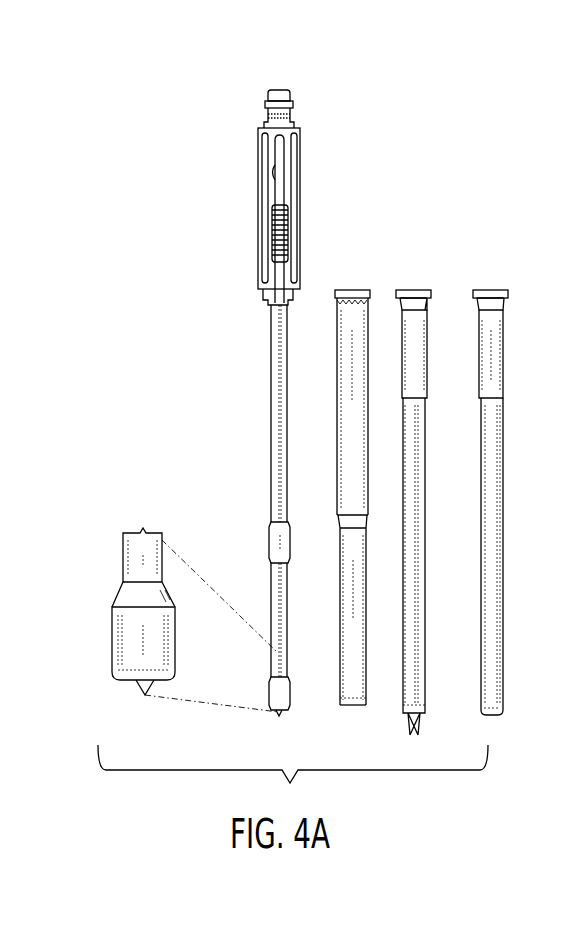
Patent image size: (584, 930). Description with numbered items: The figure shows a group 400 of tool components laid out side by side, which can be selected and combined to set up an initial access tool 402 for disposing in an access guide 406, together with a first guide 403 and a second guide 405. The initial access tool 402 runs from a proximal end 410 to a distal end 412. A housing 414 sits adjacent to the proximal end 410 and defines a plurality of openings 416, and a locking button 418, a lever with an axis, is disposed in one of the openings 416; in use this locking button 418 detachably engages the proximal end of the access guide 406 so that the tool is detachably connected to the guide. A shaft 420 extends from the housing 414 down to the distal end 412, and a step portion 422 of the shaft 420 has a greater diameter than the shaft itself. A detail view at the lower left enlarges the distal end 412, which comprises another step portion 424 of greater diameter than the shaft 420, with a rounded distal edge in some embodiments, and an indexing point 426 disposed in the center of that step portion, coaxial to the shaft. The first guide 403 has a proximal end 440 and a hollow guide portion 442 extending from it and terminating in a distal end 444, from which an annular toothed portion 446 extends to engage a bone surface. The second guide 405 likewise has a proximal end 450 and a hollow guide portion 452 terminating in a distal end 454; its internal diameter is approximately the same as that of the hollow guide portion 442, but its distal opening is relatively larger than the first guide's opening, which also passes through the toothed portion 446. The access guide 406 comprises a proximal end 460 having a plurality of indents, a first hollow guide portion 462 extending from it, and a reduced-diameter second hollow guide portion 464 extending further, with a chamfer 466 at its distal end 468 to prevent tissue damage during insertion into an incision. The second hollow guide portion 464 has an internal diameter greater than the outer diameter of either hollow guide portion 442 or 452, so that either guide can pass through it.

The group of tool components 400 is at (155, 100).
The initial access tool 402 is at (280, 179).
The first guide 403 is at (414, 490).
The second guide 405 is at (525, 458).
The access guide 406 is at (358, 487).
The proximal end 410 is at (288, 92).
The distal end 412 is at (170, 645).
The housing 414 is at (300, 133).
The openings 416 is at (276, 170).
The locking button 418 is at (275, 270).
The shaft 420 is at (270, 372).
The step portion 422 is at (268, 530).
The step portion 424 is at (155, 630).
The indexing point 426 is at (140, 690).
The proximal end 440 is at (430, 305).
The hollow guide portion 442 is at (419, 625).
The distal end 444 is at (420, 727).
The annular toothed portion 446 is at (408, 720).
The proximal end 450 is at (512, 305).
The hollow guide portion 452 is at (497, 560).
The distal end 454 is at (492, 718).
The proximal end 460 is at (370, 305).
The first hollow guide portion 462 is at (338, 485).
The second hollow guide portion 464 is at (338, 640).
The chamfer 466 is at (340, 705).
The distal end 468 is at (355, 705).